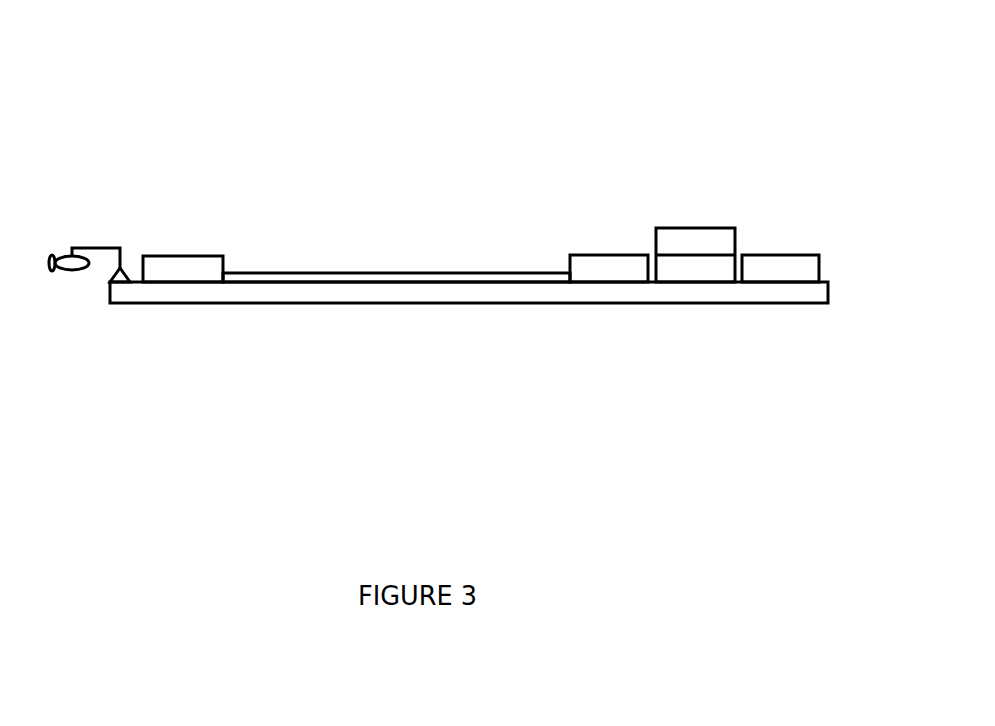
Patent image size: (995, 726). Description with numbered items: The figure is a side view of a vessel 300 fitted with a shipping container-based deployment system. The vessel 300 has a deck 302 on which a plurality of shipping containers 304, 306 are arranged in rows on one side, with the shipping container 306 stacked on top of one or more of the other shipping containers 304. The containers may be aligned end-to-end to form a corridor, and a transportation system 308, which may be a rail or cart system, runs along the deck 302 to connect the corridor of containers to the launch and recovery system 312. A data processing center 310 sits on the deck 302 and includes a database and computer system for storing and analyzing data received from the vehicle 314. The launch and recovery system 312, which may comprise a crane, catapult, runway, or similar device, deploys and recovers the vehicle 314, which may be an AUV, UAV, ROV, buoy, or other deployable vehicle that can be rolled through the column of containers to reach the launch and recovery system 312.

The vessel 300 is at (133, 50).
The deck 302 is at (172, 305).
The shipping containers 304 is at (795, 251).
The shipping container 306 is at (710, 227).
The transportation system 308 is at (409, 270).
The data processing center 310 is at (198, 253).
The launch and recovery system 312 is at (112, 244).
The vehicle 314 is at (55, 254).